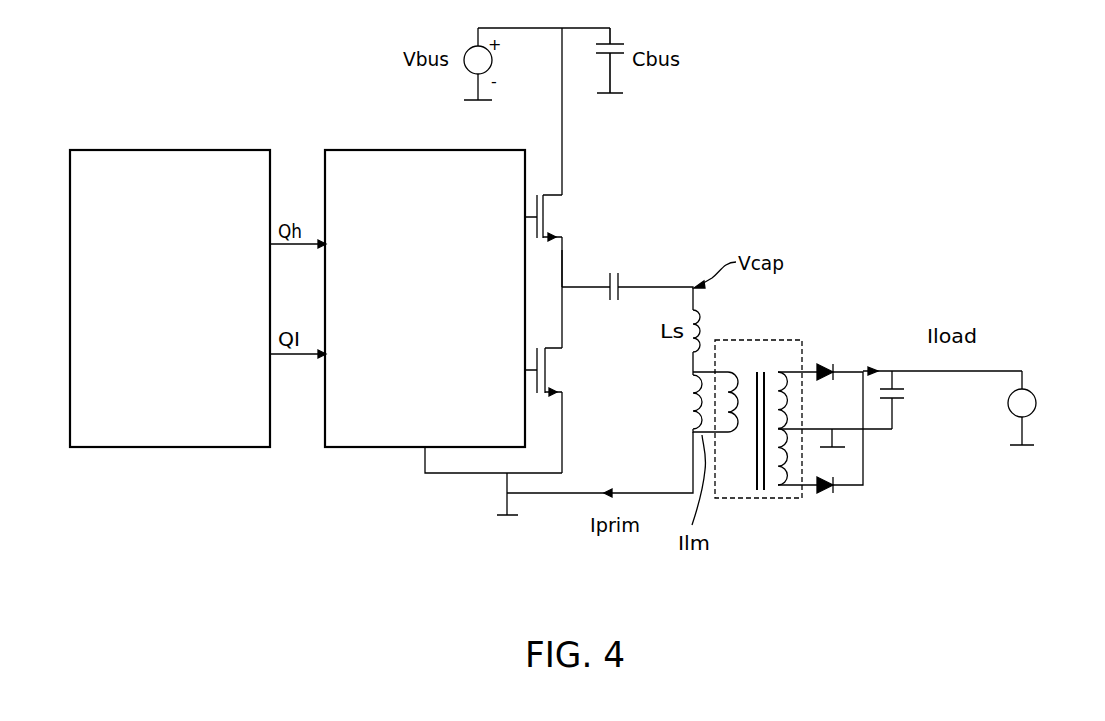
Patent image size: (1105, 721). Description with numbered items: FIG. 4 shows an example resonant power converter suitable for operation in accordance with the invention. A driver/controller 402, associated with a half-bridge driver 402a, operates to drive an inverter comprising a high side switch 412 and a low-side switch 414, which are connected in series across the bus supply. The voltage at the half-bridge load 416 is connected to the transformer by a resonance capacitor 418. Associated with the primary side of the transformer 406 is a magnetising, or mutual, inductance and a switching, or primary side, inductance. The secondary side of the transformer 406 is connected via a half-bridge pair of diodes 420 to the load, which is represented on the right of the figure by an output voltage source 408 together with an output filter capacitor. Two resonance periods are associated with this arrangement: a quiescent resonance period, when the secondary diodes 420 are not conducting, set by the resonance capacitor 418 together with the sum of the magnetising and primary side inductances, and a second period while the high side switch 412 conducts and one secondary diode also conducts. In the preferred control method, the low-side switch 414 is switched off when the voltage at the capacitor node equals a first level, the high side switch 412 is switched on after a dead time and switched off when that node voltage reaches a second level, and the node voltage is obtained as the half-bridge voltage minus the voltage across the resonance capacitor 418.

The driver/controller 402 is at (118, 150).
The half-bridge driver 402a is at (378, 131).
The high side switch 412 is at (578, 197).
The low-side switch 414 is at (530, 362).
The half-bridge load 416 is at (572, 256).
The resonance capacitor 418 is at (620, 283).
The transformer 406 is at (792, 500).
The output voltage source / load (Vout) 408 is at (1010, 369).
The half-bridge pair of diodes 420 is at (830, 490).